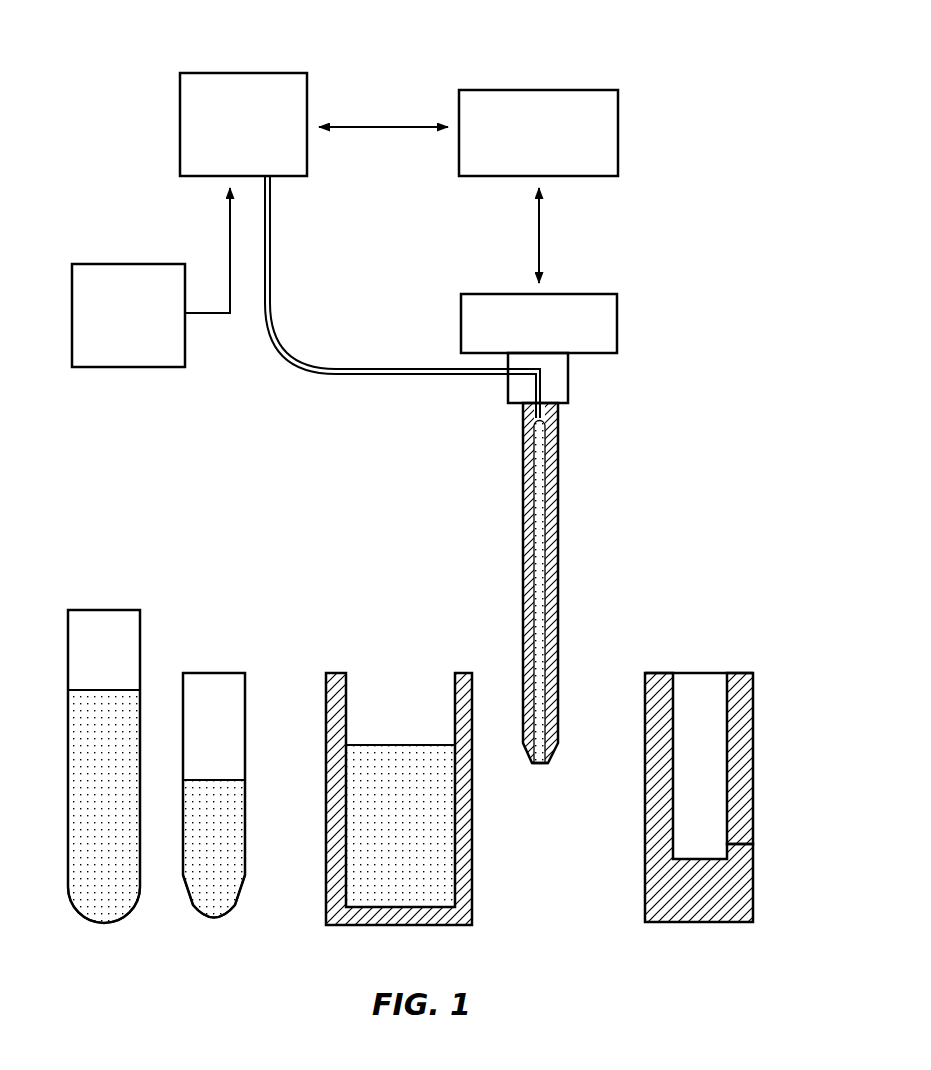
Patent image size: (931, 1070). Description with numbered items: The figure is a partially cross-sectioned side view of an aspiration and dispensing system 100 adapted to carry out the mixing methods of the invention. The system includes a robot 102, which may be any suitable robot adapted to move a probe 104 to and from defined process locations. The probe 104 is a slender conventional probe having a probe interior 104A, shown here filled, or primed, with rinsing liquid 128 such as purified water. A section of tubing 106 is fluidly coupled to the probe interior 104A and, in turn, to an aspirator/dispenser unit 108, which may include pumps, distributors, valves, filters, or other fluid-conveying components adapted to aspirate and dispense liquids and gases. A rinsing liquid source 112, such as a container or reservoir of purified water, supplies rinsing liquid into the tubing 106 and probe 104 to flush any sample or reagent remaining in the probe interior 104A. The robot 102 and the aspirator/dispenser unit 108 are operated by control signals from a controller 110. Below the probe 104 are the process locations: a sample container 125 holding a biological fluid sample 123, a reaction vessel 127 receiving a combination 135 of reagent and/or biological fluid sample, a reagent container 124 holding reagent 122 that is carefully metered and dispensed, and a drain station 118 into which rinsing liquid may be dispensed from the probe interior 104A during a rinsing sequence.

The aspiration and dispensing system 100 is at (391, 62).
The robot 102 is at (609, 363).
The probe 104 is at (553, 583).
The probe interior 104A is at (542, 566).
The tubing 106 is at (366, 376).
The aspirator/dispenser unit 108 is at (179, 117).
The controller 110 is at (619, 135).
The rinsing liquid source 112 is at (108, 263).
The drain station 118 is at (636, 788).
The reagent 122 is at (390, 744).
The biological fluid sample 123 is at (112, 689).
The reagent container 124 is at (429, 799).
The sample container 125 is at (132, 742).
The reaction vessel 127 is at (247, 770).
The rinsing liquid 128 is at (538, 467).
The combination 135 is at (228, 779).